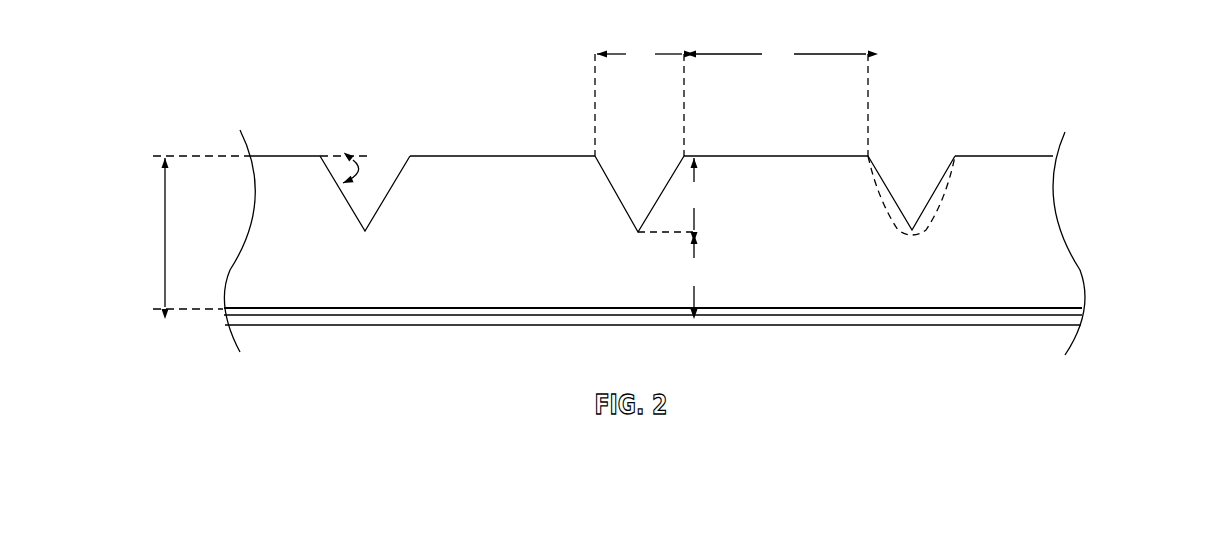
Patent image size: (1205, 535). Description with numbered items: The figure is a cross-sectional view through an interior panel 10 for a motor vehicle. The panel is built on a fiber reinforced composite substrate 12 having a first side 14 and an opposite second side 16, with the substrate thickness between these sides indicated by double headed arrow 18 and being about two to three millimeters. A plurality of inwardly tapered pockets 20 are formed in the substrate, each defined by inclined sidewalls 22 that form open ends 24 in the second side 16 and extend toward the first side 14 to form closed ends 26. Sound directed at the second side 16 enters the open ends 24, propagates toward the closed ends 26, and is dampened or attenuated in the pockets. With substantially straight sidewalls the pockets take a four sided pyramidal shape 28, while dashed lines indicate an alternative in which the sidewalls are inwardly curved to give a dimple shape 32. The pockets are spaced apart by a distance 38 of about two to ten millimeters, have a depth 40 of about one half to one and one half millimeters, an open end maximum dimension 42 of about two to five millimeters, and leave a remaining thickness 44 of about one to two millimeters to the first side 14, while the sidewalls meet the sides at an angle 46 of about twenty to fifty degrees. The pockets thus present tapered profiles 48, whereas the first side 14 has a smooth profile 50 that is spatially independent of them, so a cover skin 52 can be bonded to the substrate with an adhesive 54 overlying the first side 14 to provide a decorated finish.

The interior panel 10 is at (1091, 82).
The fiber reinforced composite substrate 12 is at (1033, 245).
The first side 14 is at (1018, 308).
The second side 16 is at (307, 156).
The thickness 18 is at (165, 232).
The inwardly tapered pockets 20 is at (391, 99).
The inclined sidewalls 22 is at (397, 173).
The open ends 24 is at (377, 157).
The closed ends 26 is at (392, 193).
The four sided pyramidal shape 28 is at (945, 173).
The dimple shape 32 is at (930, 222).
The spacing distance 38 is at (777, 98).
The depth 40 is at (674, 195).
The maximum dimension 42 is at (639, 98).
The remaining thickness 44 is at (694, 270).
The angle 46 is at (357, 190).
The tapered profiles 48 is at (615, 193).
The smooth profile 50 is at (927, 307).
The cover skin 52 is at (510, 325).
The adhesive 54 is at (353, 318).